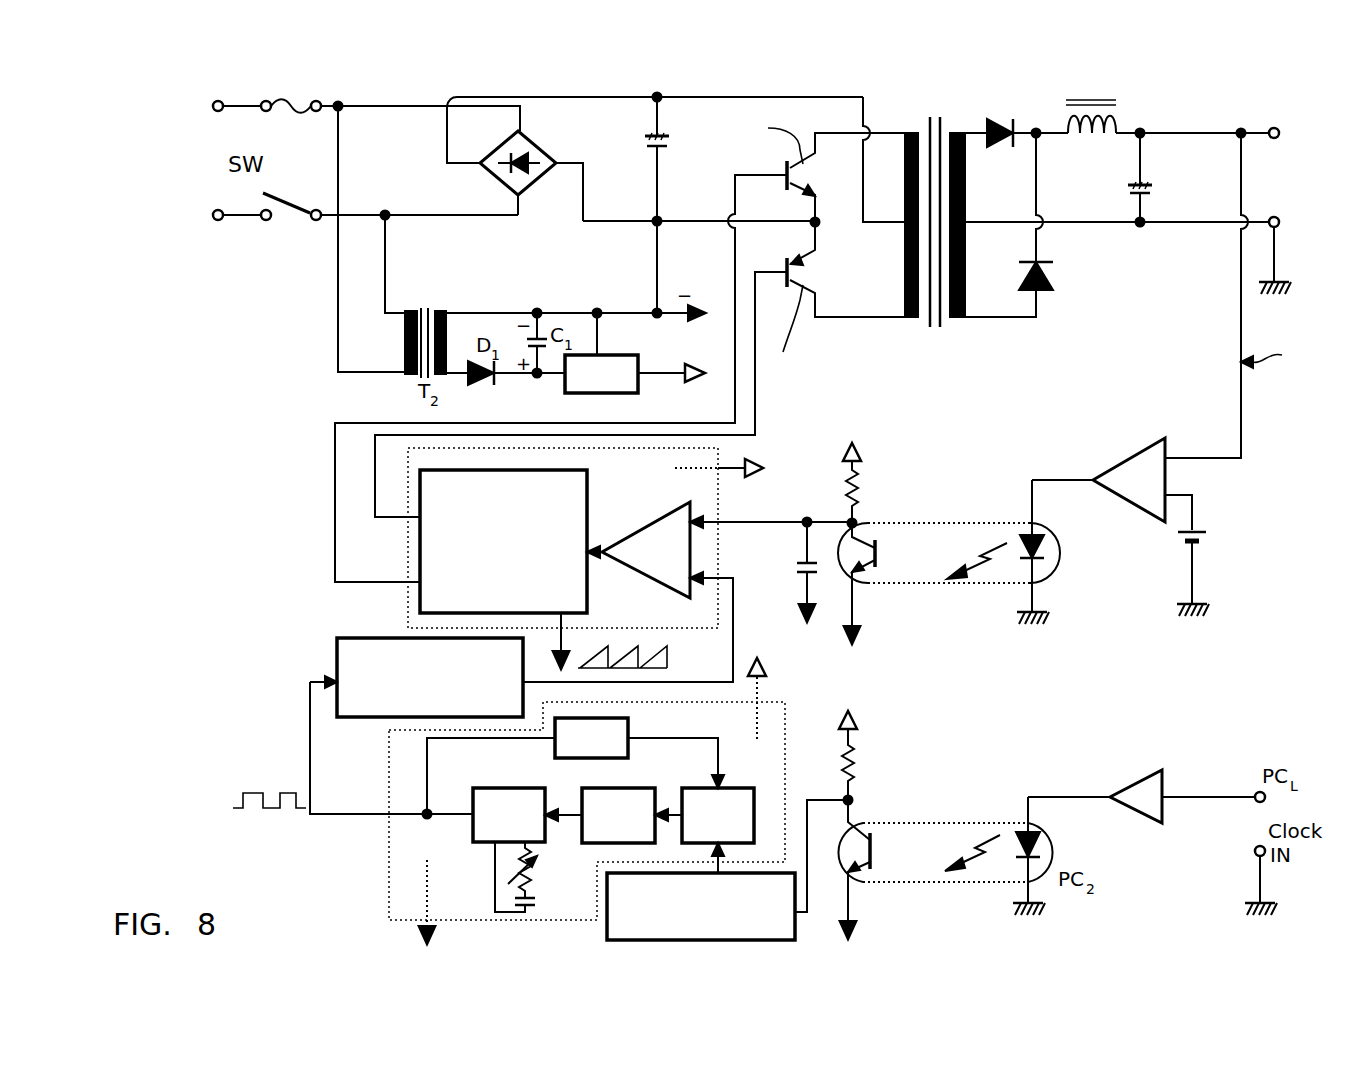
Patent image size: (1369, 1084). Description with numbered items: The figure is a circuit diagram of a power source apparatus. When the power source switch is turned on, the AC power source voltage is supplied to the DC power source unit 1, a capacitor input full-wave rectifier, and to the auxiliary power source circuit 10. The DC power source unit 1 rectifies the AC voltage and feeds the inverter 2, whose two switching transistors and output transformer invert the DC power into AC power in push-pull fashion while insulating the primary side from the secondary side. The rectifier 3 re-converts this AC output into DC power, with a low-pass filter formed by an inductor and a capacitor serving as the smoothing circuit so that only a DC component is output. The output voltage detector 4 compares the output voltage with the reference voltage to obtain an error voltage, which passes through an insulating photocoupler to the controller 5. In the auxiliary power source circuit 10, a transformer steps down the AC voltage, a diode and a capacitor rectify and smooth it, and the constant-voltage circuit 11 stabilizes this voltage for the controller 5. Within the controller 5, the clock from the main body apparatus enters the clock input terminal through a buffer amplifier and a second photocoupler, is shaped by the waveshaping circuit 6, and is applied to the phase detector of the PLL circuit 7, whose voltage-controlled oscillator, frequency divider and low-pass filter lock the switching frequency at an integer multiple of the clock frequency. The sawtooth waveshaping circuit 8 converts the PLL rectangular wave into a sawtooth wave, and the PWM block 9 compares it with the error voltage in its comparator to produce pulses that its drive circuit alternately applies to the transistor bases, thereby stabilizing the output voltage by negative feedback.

The DC power source unit 1 is at (618, 151).
The inverter 2 is at (862, 298).
The rectifier 3 is at (1073, 189).
The output voltage detector 4 is at (1078, 463).
The controller 5 is at (824, 672).
The waveshaping circuit 6 is at (795, 937).
The PLL circuit 7 is at (389, 835).
The sawtooth waveshaping circuit 8 is at (337, 648).
The PWM block 9 is at (408, 598).
The auxiliary power source circuit 10 is at (508, 270).
The constant-voltage circuit 11 is at (629, 356).